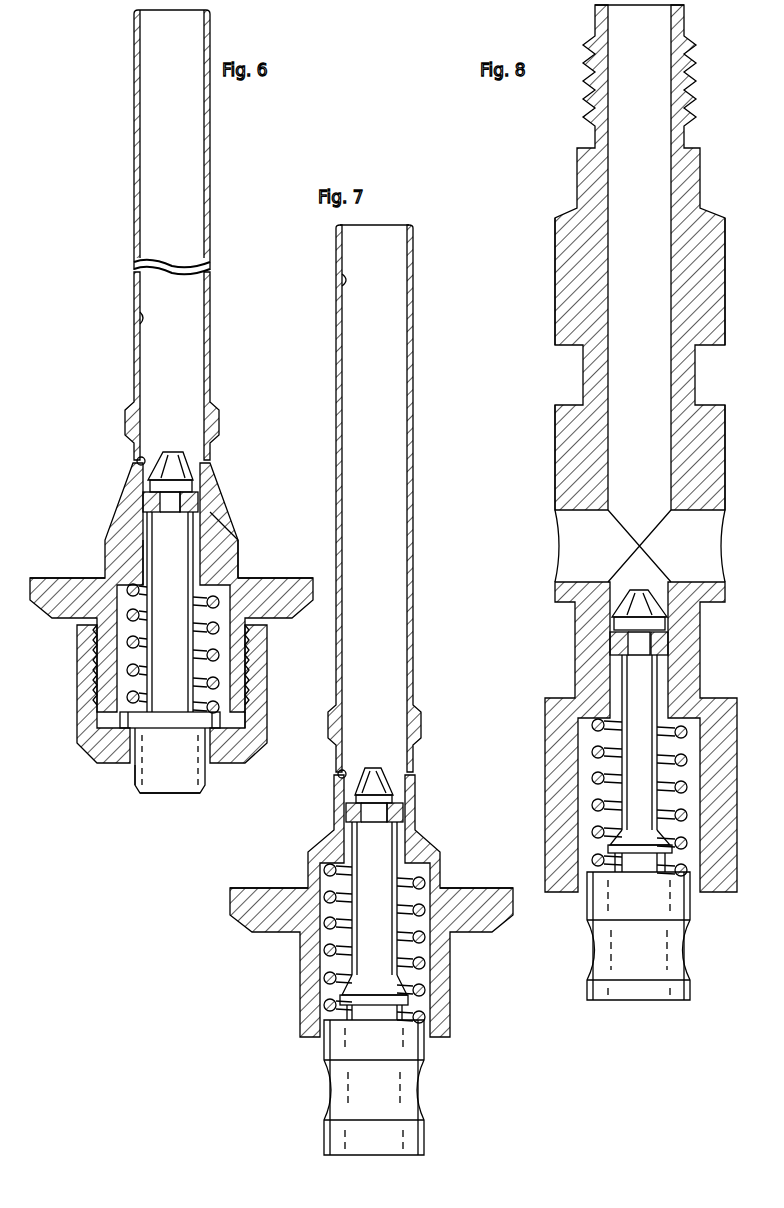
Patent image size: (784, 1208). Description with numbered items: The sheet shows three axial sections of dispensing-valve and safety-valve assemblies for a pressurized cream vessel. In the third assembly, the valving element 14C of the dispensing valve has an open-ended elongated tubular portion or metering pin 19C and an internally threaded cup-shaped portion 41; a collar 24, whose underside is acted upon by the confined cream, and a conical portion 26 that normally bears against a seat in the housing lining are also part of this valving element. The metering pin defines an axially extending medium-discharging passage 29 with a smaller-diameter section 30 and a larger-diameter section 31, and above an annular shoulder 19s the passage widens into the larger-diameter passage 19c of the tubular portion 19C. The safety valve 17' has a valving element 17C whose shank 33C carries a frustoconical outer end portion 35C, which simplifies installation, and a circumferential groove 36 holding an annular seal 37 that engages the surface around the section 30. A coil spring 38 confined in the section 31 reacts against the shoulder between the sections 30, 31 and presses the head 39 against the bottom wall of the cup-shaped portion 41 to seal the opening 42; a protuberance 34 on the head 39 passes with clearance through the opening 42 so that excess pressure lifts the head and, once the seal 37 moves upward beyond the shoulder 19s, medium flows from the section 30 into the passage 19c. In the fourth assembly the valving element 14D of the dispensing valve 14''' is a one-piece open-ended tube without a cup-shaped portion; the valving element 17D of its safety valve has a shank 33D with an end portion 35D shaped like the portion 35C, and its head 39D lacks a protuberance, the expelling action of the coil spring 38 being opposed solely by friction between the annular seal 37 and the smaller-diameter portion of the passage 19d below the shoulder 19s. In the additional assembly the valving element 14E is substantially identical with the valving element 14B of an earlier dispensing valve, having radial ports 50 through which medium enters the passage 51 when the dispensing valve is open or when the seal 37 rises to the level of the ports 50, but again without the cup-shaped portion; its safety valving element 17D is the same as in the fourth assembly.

In FIG. 6, the open-ended elongated tubular portion or metering pin 19C is at (134, 180).
In FIG. 6, the larger-diameter passage 19c is at (143, 318).
In FIG. 6, the annular shoulder 19s is at (137, 460).
In FIG. 7, the annular shoulder 19s is at (338, 775).
In FIG. 6, the conical outer end portion 35C is at (175, 452).
In FIG. 6, the valving element 14C is at (112, 522).
In FIG. 6, the circumferential groove 36 is at (160, 500).
In FIG. 7, the circumferential groove 36 is at (365, 813).
In FIG. 8, the circumferential groove 36 is at (620, 650).
In FIG. 6, the annular seal 37 is at (197, 502).
In FIG. 7, the annular seal 37 is at (398, 817).
In FIG. 8, the annular seal 37 is at (625, 641).
In FIG. 6, the smaller-diameter first section 30 is at (205, 532).
In FIG. 7, the smaller-diameter first section 30 is at (348, 840).
In FIG. 6, the conical portion 26 is at (222, 548).
In FIG. 6, the collar 24 is at (50, 585).
In FIG. 7, the collar 24 is at (490, 895).
In FIG. 6, the medium-discharging passage 29 is at (143, 566).
In FIG. 6, the shank 33C is at (178, 580).
In FIG. 6, the valving element 17C is at (172, 630).
In FIG. 6, the coil spring 38 is at (130, 650).
In FIG. 7, the coil spring 38 is at (417, 990).
In FIG. 8, the coil spring 38 is at (598, 786).
In FIG. 6, the larger-diameter second section 31 is at (214, 668).
In FIG. 6, the head 39 is at (114, 721).
In FIG. 6, the cup-shaped portion 41 is at (255, 716).
In FIG. 6, the protuberance 34 is at (195, 777).
In FIG. 6, the opening 42 is at (134, 770).
In FIG. 6, the safety valve 17' is at (170, 830).
In FIG. 7, the dispensing valve 14''' is at (319, 613).
In FIG. 7, the valving element 14D is at (335, 355).
In FIG. 7, the passage 19d is at (342, 280).
In FIG. 7, the outer end portion 35D is at (373, 768).
In FIG. 8, the outer end portion 35D is at (615, 578).
In FIG. 7, the valve stem 33D is at (383, 950).
In FIG. 7, the head 39D is at (408, 1043).
In FIG. 8, the head 39D is at (605, 905).
In FIG. 7, the valving element 17D is at (372, 1087).
In FIG. 8, the valving element 17D is at (638, 745).
In FIG. 8, the valving element 14E is at (572, 160).
In FIG. 8, the passage 51 is at (618, 270).
In FIG. 8, the valving element 14B is at (553, 450).
In FIG. 8, the radial ports 50 is at (578, 540).